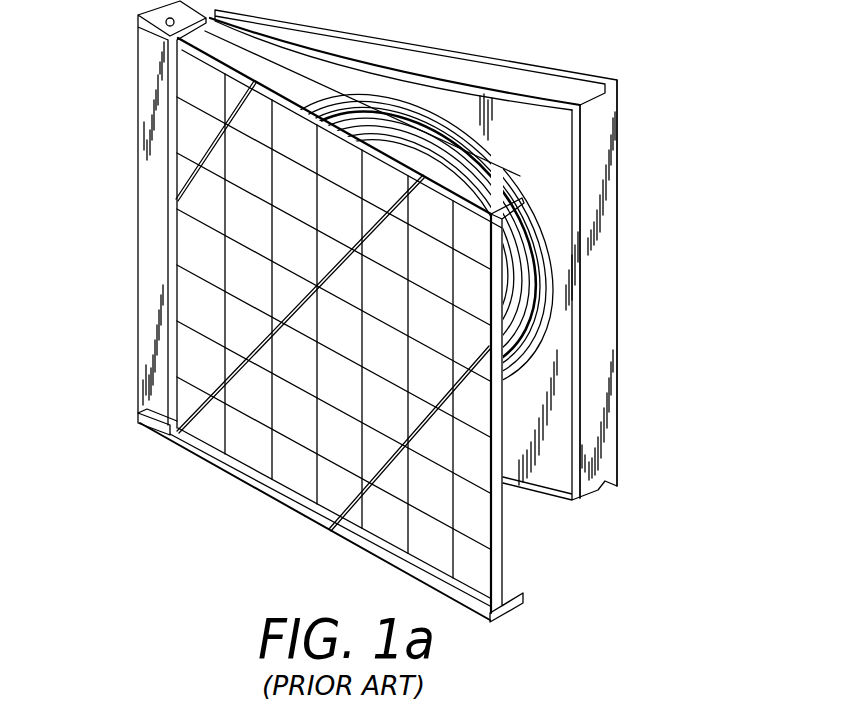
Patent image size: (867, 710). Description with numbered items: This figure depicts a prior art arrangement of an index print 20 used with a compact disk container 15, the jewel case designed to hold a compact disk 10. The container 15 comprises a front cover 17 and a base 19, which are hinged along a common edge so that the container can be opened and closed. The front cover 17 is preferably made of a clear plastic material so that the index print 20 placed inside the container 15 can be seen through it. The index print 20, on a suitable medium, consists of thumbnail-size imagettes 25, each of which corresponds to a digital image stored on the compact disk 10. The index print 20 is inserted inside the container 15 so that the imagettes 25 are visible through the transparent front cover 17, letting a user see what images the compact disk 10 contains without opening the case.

The compact disk 10 is at (534, 309).
The compact disk container 15 is at (620, 88).
The front cover 17 is at (287, 504).
The base 19 is at (617, 430).
The index print 20 is at (500, 550).
The imagettes 25 is at (92, 256).